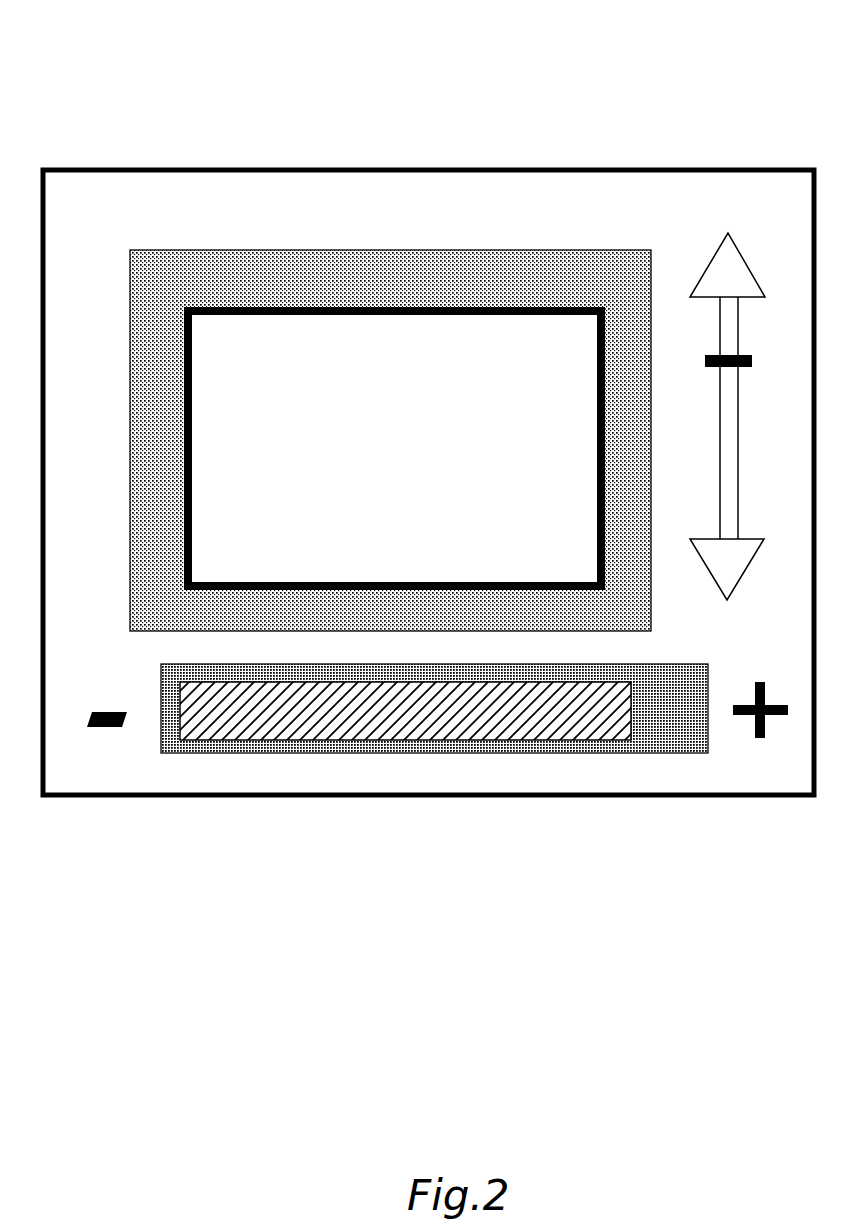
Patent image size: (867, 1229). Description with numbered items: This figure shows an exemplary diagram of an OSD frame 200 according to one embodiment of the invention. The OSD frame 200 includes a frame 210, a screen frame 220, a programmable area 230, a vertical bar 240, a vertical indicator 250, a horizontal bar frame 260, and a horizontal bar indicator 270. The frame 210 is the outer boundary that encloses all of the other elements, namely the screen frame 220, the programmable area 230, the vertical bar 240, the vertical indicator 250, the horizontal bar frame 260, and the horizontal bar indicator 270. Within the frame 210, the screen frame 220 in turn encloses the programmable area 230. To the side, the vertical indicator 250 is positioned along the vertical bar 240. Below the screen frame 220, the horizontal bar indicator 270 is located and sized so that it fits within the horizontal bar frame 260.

The OSD frame 200 is at (635, 76).
The frame 210 is at (290, 166).
The screen frame 220 is at (170, 249).
The programmable area 230 is at (298, 307).
The vertical bar 240 is at (747, 258).
The vertical indicator 250 is at (758, 366).
The horizontal bar frame 260 is at (668, 664).
The horizontal bar indicator 270 is at (636, 712).